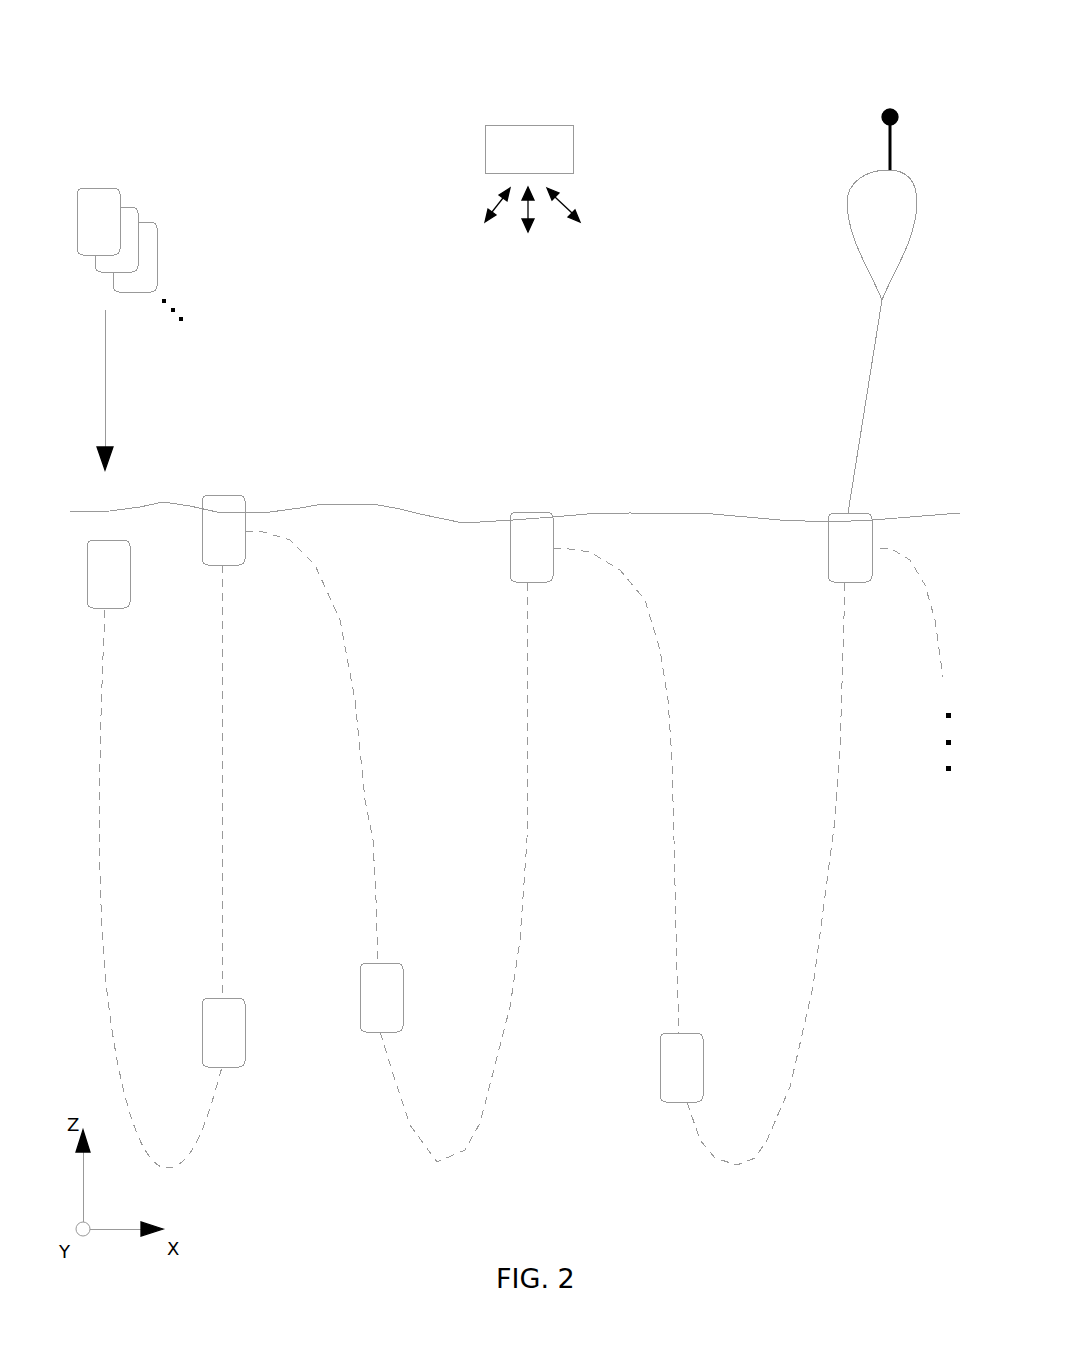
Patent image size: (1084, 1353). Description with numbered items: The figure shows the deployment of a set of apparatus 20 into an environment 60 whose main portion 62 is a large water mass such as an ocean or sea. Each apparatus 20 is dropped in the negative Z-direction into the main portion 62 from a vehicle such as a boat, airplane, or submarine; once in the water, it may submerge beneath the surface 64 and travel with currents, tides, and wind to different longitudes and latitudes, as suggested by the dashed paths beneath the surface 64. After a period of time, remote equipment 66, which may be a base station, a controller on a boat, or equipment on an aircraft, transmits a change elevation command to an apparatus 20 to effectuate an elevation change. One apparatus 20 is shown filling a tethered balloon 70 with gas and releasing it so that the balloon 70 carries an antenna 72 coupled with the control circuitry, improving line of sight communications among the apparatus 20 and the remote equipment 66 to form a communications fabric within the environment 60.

The apparatus 20 is at (204, 125).
The environment 60 is at (73, 54).
The main portion of the environment 62 is at (480, 932).
The surface 64 is at (733, 515).
The remote equipment 66 is at (539, 158).
The tethered balloon 70 is at (899, 222).
The antenna 72 is at (888, 153).